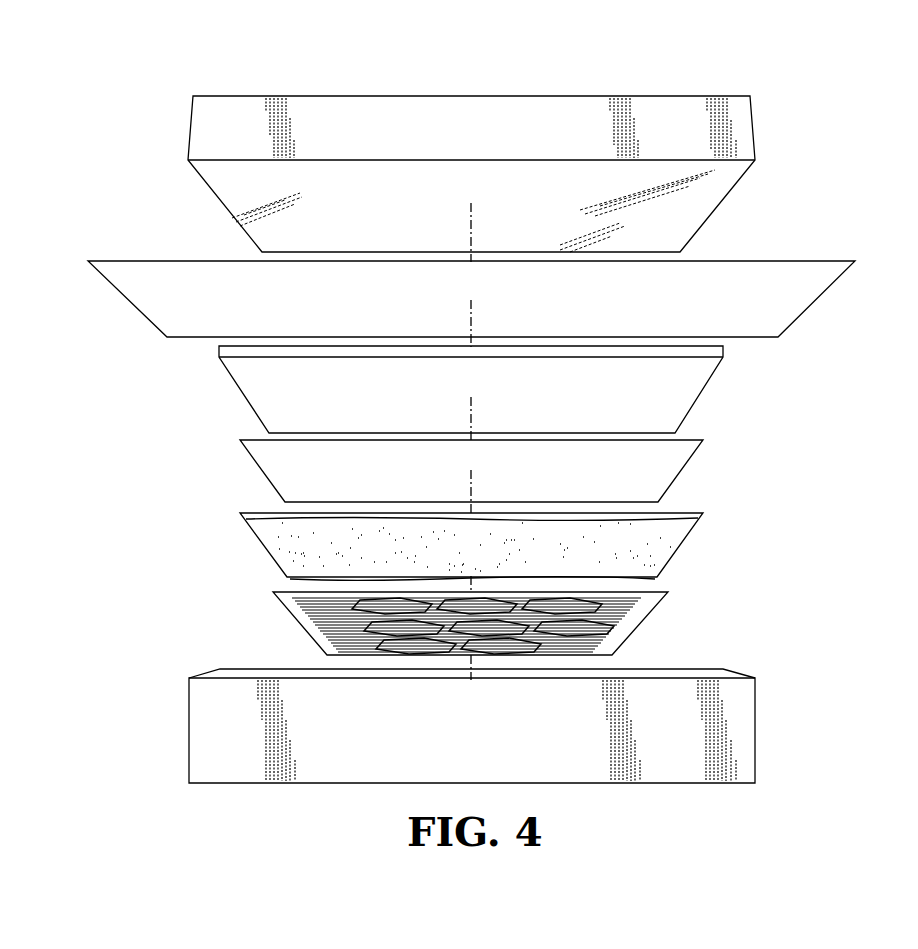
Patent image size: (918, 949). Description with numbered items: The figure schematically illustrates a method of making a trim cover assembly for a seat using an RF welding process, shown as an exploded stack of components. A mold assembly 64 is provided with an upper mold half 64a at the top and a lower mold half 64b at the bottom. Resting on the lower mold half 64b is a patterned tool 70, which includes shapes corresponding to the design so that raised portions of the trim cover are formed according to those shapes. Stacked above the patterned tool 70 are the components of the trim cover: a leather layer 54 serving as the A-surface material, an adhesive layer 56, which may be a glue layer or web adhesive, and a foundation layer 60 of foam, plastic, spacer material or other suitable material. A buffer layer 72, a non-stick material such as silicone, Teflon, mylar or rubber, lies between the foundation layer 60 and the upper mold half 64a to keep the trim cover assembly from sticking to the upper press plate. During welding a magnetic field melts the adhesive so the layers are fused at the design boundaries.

The mold assembly 64 is at (145, 72).
The upper mold half 64a is at (222, 203).
The lower mold half 64b is at (189, 728).
The buffer layer 72 is at (130, 302).
The foundation layer 60 is at (245, 395).
The adhesive layer 56 is at (263, 476).
The leather layer 54 is at (266, 551).
The patterned tool 70 is at (304, 630).